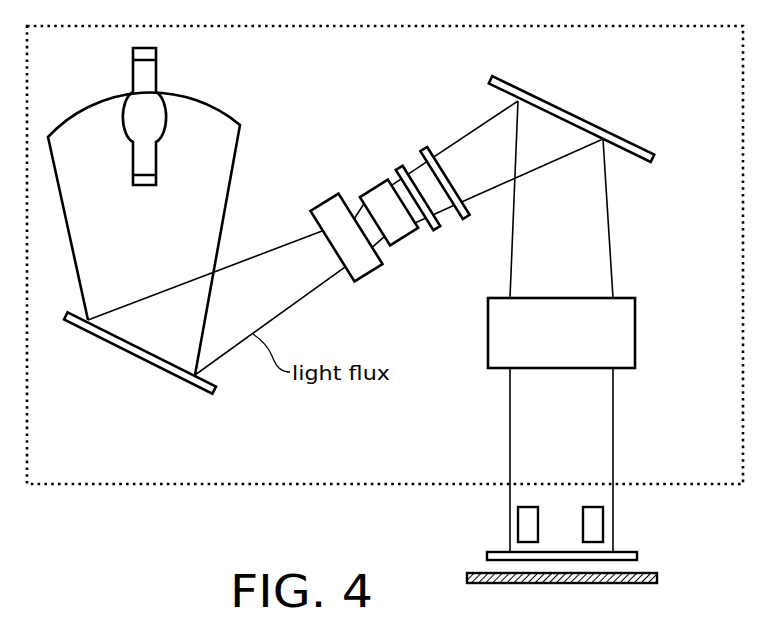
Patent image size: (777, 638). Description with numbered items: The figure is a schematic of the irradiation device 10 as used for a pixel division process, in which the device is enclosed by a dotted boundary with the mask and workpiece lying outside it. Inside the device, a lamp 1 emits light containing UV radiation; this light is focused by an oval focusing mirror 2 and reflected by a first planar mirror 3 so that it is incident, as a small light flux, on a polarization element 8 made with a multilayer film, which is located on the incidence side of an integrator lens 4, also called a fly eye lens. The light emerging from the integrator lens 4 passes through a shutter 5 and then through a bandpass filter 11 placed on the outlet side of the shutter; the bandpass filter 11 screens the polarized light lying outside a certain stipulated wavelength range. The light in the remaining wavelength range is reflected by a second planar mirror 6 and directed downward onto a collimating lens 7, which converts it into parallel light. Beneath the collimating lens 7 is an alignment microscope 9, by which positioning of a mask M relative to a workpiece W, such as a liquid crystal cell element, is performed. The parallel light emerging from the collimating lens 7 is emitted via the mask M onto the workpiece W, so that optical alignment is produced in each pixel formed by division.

The lamp 1 is at (157, 73).
The oval focusing mirror 2 is at (239, 127).
The first planar mirror 3 is at (121, 360).
The integrator lens 4 is at (378, 186).
The shutter 5 is at (402, 166).
The second planar mirror 6 is at (590, 124).
The collimating lens 7 is at (635, 312).
The polarization element 8 is at (370, 274).
The alignment microscope 9 is at (603, 517).
The irradiation device 10 is at (62, 486).
The bandpass filter 11 is at (466, 219).
The mask M is at (628, 552).
The workpiece W is at (651, 573).